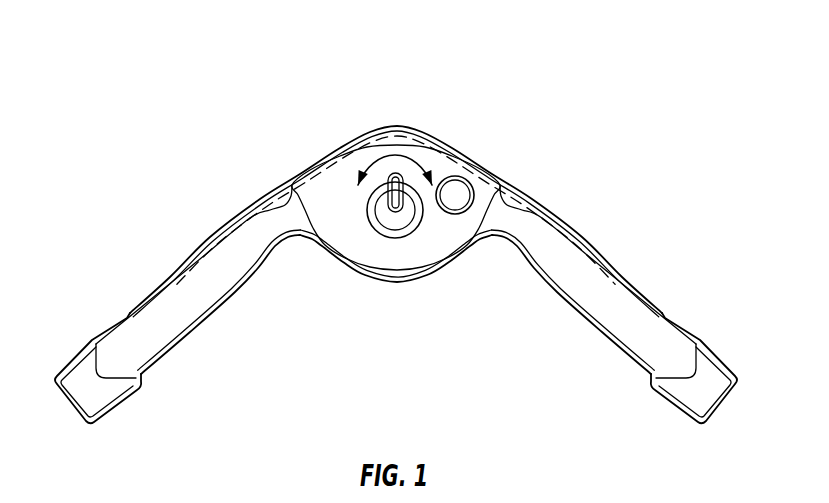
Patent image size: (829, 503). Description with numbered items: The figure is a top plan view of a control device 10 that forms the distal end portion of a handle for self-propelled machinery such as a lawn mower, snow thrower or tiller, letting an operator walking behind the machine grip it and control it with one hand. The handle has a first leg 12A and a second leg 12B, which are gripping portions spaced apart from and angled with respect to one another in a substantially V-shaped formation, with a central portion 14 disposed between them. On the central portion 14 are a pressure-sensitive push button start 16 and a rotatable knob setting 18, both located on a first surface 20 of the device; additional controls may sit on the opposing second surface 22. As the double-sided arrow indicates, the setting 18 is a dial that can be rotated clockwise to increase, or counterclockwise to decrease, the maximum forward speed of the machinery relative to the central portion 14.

The control device 10 is at (205, 163).
The first leg 12A is at (190, 346).
The second leg 12B is at (614, 348).
The central portion 14 is at (380, 125).
The push button start 16 is at (460, 200).
The knob setting 18 is at (395, 238).
The first surface 20 is at (355, 165).
The second surface 22 is at (257, 190).